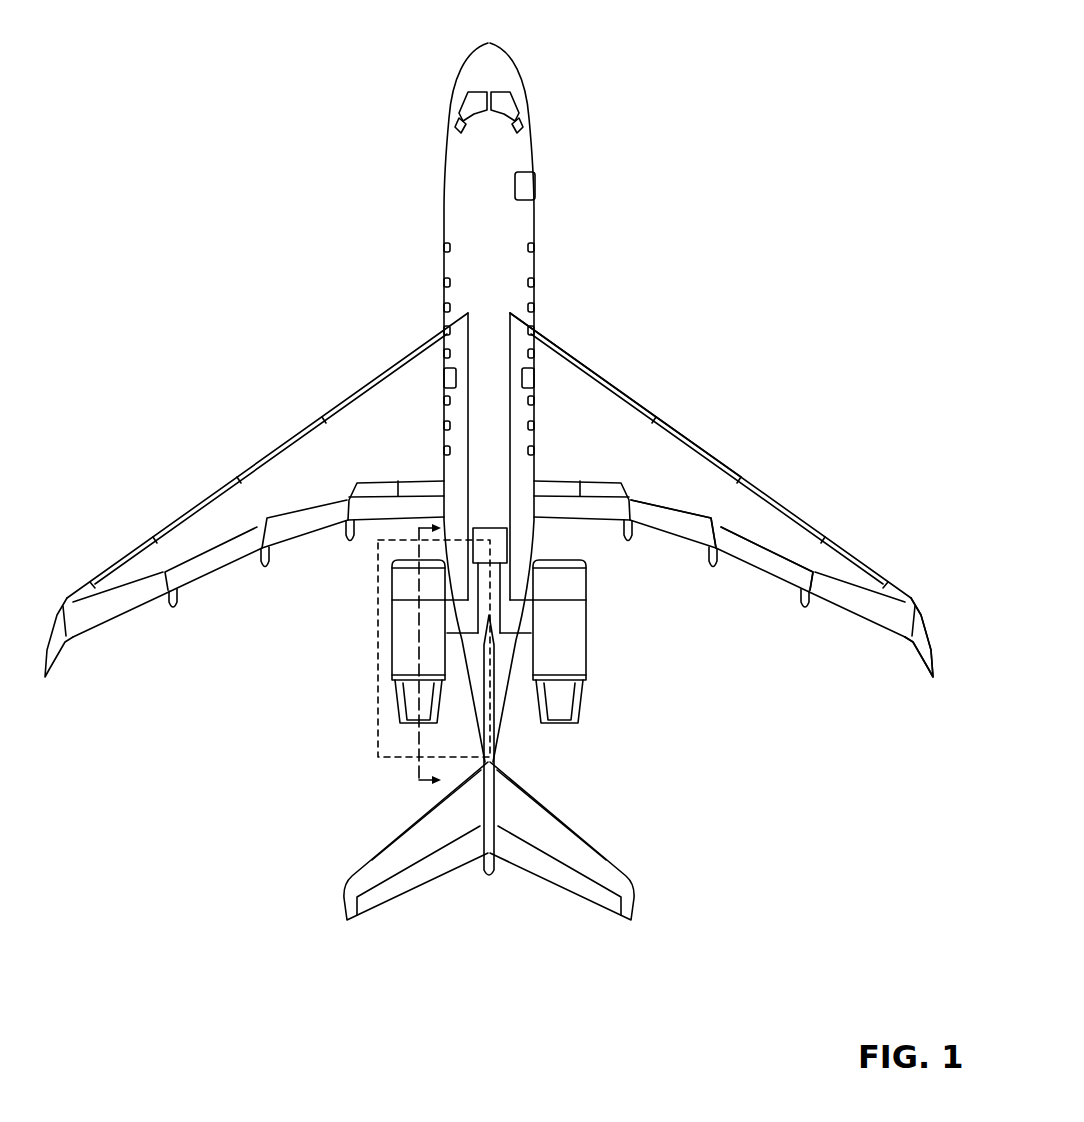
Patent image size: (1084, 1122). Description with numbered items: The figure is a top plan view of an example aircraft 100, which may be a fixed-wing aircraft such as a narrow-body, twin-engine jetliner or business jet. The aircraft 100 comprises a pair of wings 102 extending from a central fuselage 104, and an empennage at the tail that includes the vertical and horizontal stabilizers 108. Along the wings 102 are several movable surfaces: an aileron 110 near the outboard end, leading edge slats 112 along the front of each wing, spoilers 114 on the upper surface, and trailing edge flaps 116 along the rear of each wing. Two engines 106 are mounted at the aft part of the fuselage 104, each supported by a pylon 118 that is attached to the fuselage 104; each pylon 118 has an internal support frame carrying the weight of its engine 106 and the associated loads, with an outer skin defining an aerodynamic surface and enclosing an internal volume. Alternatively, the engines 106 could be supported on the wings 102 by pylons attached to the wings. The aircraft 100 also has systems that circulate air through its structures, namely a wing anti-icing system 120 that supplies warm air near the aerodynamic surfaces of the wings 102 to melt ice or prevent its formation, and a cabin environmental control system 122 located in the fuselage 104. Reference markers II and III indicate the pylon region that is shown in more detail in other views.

The aircraft 100 is at (700, 74).
The wings 102 is at (388, 405).
The fuselage 104 is at (453, 207).
The engines 106 is at (396, 661).
The vertical and horizontal stabilizers 108 is at (397, 860).
The aileron 110 is at (937, 660).
The leading edge slat 112 is at (773, 503).
The spoiler 114 is at (653, 518).
The trailing edge flap 116 is at (690, 518).
The pylon 118 is at (455, 700).
The wing anti-icing system 120 is at (690, 443).
The cabin environmental control system 122 is at (500, 542).
The section view II is at (419, 768).
The detail view III is at (377, 728).